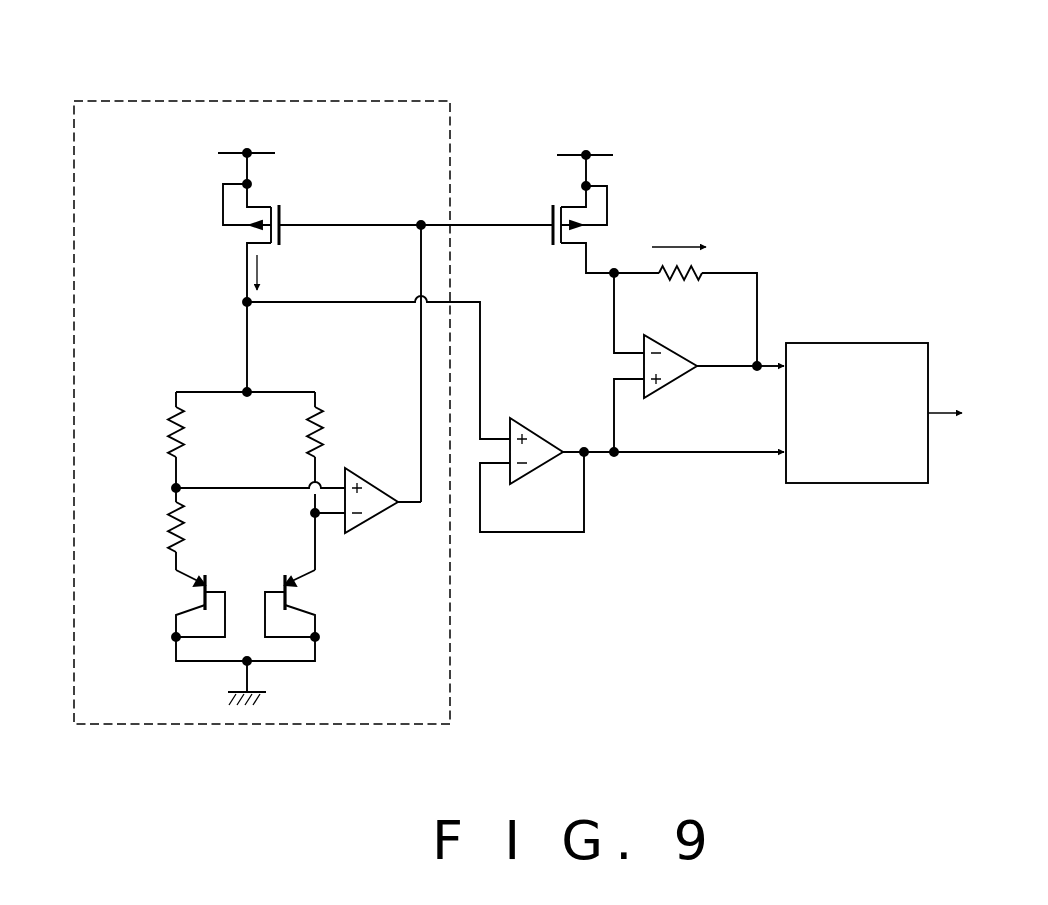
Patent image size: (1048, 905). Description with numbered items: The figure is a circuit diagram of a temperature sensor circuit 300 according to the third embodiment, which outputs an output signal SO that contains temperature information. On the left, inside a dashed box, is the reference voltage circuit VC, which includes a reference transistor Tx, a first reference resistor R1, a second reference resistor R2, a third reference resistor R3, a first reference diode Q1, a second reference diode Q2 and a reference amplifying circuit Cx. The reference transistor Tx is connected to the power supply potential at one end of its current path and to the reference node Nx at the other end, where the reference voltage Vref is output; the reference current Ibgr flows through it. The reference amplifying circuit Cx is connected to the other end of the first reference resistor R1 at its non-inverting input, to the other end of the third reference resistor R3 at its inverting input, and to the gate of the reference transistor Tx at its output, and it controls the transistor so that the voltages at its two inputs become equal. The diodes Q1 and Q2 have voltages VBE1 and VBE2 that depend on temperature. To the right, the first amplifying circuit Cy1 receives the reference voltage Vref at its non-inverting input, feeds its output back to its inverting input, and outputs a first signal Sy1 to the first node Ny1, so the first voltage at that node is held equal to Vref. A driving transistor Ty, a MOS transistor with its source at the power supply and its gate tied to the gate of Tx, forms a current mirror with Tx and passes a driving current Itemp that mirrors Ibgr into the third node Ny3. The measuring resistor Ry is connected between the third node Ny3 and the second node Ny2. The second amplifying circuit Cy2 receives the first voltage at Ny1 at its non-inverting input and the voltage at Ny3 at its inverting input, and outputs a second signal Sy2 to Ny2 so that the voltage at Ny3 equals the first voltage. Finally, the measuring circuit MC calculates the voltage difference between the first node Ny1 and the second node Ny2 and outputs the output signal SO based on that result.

The reference voltage circuit VC is at (280, 101).
The reference transistor Tx is at (261, 205).
The reference current Ibgr is at (286, 272).
The reference node Nx is at (247, 302).
The reference voltage Vref is at (378, 363).
The first reference resistor R1 is at (170, 425).
The second reference resistor R2 is at (170, 520).
The third reference resistor R3 is at (325, 430).
The reference amplifying circuit Cx is at (381, 488).
The first reference diode Q1 is at (191, 578).
The second reference diode Q2 is at (298, 578).
The voltage of first reference diode VBE1 is at (135, 579).
The voltage of second reference diode VBE2 is at (360, 579).
The driving transistor Ty is at (572, 206).
The driving current Itemp is at (691, 229).
The third node Ny3 is at (611, 276).
The measuring resistor Ry is at (668, 279).
The second amplifying circuit Cy2 is at (641, 367).
The first amplifying circuit Cy1 is at (541, 436).
The first node Ny1 is at (588, 457).
The first signal Sy1 is at (697, 439).
The second signal Sy2 is at (743, 350).
The second node Ny2 is at (755, 371).
The measuring circuit MC is at (855, 343).
The output signal SO is at (969, 412).
The temperature sensor circuit 300 is at (723, 708).